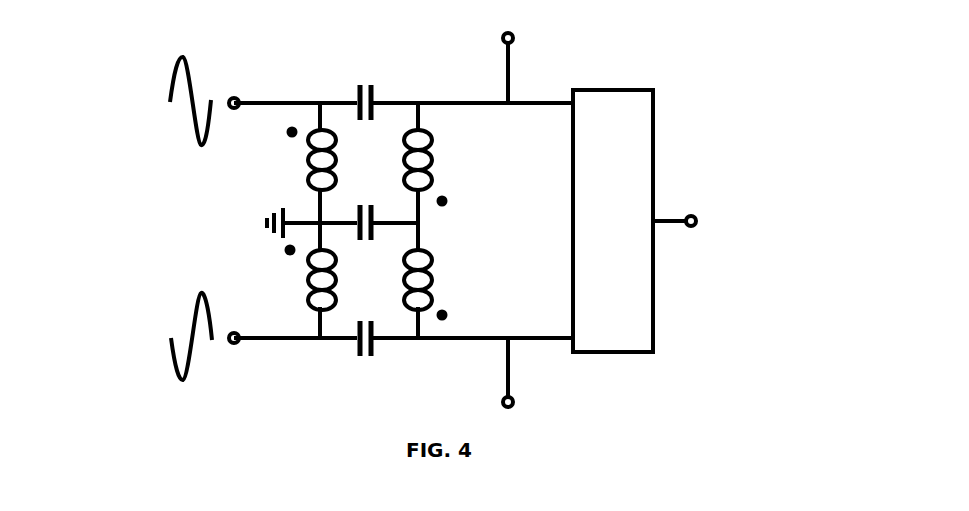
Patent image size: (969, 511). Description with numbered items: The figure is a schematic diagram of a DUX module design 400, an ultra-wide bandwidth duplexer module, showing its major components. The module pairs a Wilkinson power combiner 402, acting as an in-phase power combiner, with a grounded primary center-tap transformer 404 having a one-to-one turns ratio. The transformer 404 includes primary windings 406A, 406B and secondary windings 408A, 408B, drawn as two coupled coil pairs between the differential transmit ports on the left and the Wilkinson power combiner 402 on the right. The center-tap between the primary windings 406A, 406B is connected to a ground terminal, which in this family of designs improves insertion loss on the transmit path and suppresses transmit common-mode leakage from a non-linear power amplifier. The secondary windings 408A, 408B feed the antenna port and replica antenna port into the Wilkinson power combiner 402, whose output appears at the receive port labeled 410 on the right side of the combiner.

The DUX module design 400 is at (686, 86).
The Wilkinson power combiner 402 is at (655, 172).
The grounded primary center-tap transformer 404 is at (363, 74).
The primary winding 406A is at (308, 146).
The primary winding 406B is at (306, 290).
The secondary winding 408A is at (430, 152).
The secondary winding 408B is at (430, 271).
The receive port 410 is at (696, 226).